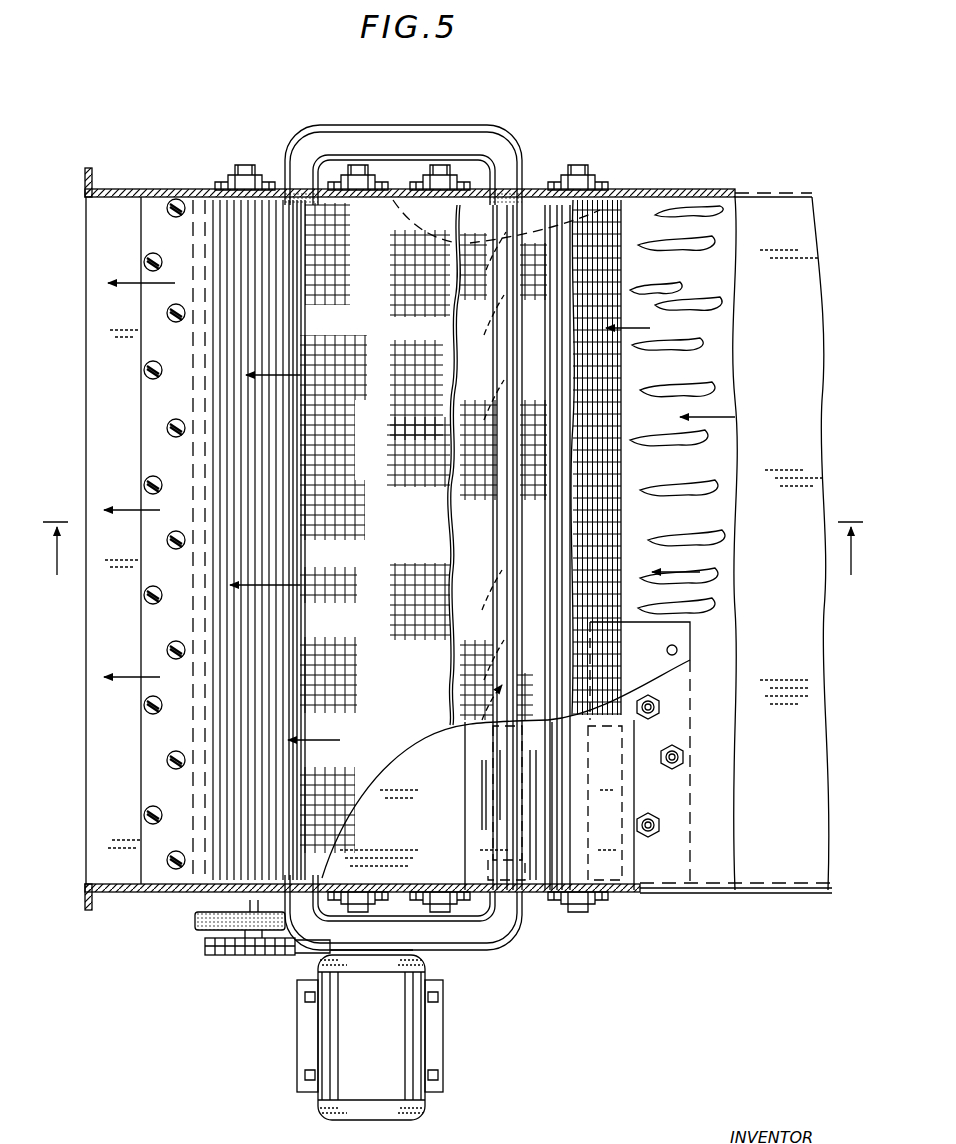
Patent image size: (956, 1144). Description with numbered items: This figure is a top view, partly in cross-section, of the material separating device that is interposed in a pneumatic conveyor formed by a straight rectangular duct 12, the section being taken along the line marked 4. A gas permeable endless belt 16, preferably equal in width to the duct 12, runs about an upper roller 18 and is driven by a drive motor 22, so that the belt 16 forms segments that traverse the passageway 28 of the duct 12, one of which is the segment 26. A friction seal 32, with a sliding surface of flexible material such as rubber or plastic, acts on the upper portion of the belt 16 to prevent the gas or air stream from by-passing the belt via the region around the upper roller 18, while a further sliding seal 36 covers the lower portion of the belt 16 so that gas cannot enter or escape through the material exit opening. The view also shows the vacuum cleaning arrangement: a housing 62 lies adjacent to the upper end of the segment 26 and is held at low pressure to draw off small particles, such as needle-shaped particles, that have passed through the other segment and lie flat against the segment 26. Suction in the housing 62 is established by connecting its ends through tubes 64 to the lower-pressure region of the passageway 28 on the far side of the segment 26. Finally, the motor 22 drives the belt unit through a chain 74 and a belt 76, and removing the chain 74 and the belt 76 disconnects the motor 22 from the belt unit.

The section line 4- 4 is at (452, 560).
The duct 12 is at (770, 770).
The endless belt 16 is at (612, 522).
The roller 18 is at (545, 715).
The drive motor 22 is at (382, 1038).
The segment 26 is at (445, 345).
The passageway 28 is at (118, 494).
The friction seal 32 is at (640, 628).
The seal 36 is at (292, 610).
The housing 62 is at (526, 547).
The tubes 64 is at (500, 152).
The chain 74 is at (302, 948).
The belt 76 is at (196, 917).